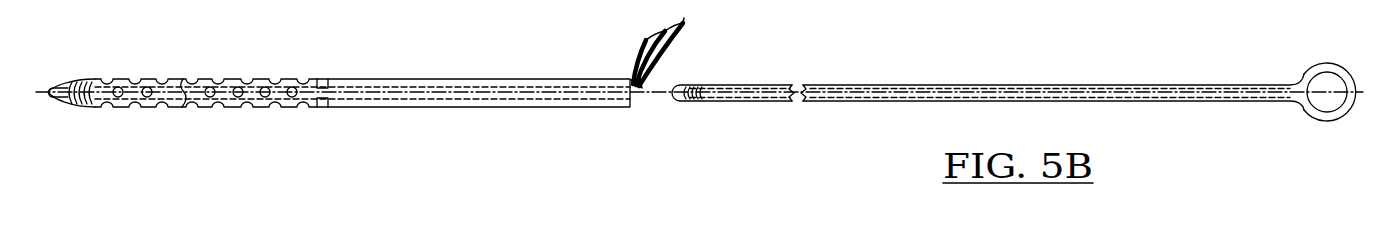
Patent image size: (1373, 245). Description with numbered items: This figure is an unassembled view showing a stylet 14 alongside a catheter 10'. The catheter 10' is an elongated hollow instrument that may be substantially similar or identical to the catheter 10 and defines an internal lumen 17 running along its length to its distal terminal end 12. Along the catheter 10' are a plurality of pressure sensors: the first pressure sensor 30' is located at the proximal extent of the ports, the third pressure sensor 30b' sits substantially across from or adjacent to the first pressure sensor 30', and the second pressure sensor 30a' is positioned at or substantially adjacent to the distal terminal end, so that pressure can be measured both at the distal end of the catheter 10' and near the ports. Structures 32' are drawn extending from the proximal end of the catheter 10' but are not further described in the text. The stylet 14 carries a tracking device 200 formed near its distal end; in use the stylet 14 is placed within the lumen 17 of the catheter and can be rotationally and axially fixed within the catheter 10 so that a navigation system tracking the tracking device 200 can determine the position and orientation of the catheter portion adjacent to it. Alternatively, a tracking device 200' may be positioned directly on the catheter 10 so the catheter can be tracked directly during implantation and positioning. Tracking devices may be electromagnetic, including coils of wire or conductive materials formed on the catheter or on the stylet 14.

The catheter 10' is at (362, 117).
The lumen 17 is at (523, 98).
The distal terminal end 12 is at (45, 94).
The second pressure sensor 30a' is at (93, 61).
The tracking device 200' is at (98, 128).
The first pressure sensor 30' is at (361, 62).
The third pressure sensor 30b' is at (277, 124).
The flexible tines 32' is at (764, 53).
The catheter 10 is at (779, 118).
The tracking device 200 is at (712, 124).
The stylet 14 is at (1228, 102).